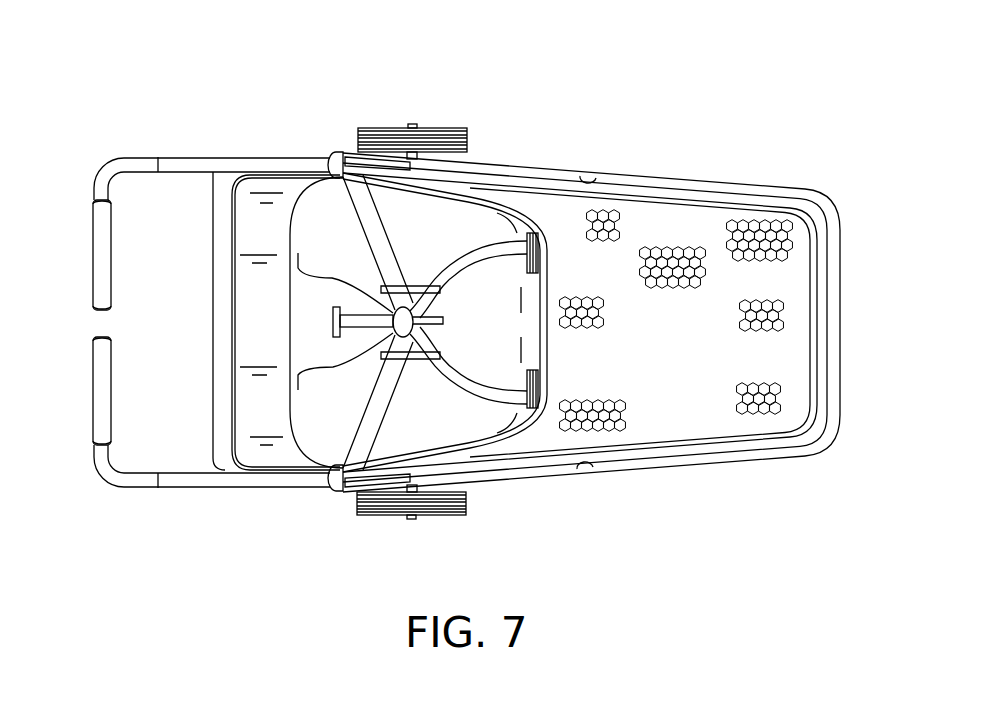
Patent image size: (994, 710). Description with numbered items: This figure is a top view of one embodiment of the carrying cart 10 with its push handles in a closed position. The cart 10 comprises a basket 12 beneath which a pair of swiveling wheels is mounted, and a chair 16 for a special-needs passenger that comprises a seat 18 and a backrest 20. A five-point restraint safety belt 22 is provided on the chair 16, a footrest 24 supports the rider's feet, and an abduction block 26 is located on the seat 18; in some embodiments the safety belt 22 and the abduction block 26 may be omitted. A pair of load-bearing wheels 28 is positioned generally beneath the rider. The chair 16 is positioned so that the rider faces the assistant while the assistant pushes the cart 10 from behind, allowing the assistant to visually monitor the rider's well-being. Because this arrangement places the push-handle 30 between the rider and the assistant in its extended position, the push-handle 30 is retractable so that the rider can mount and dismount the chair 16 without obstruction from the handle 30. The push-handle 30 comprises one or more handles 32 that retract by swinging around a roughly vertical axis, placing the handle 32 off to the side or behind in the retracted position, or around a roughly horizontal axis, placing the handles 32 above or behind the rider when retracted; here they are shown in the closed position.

The carrying cart 10 is at (622, 52).
The basket 12 is at (697, 338).
The chair 16 is at (566, 355).
The seat 18 is at (353, 387).
The backrest 20 is at (550, 267).
The five-point restraint safety belt 22 is at (477, 253).
The footrest 24 is at (273, 338).
The abduction block 26 is at (332, 290).
The load-bearing wheels 28 is at (378, 130).
The push-handle 30 is at (127, 160).
The handles 32 is at (100, 254).